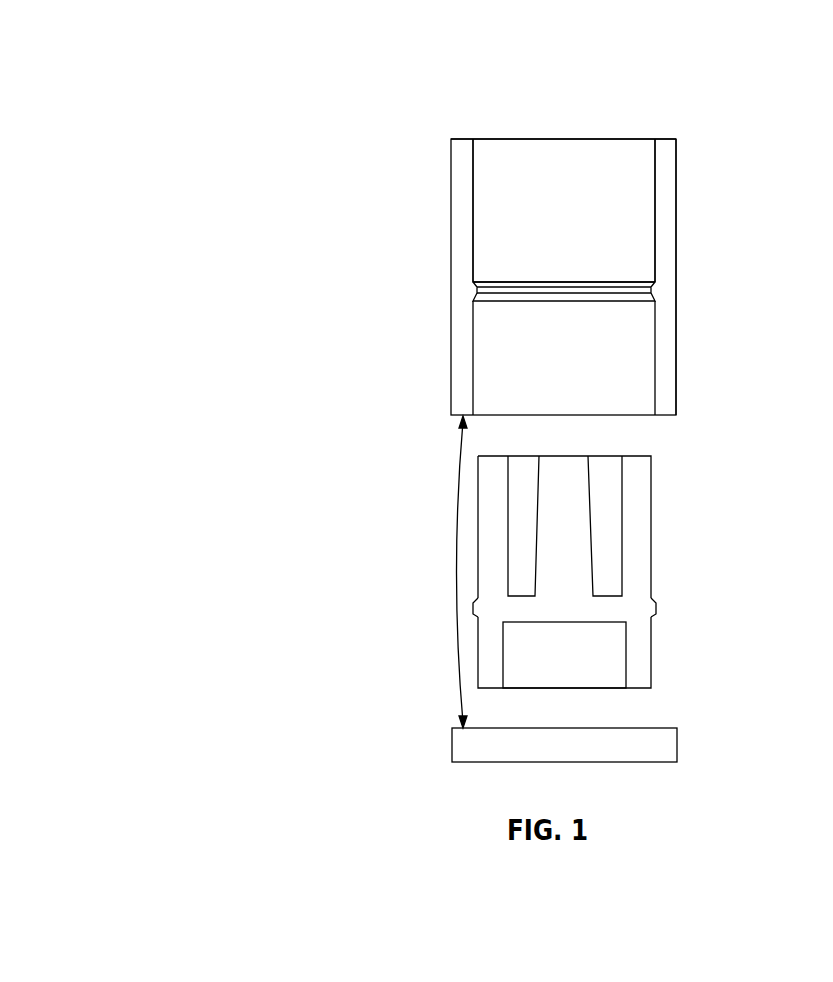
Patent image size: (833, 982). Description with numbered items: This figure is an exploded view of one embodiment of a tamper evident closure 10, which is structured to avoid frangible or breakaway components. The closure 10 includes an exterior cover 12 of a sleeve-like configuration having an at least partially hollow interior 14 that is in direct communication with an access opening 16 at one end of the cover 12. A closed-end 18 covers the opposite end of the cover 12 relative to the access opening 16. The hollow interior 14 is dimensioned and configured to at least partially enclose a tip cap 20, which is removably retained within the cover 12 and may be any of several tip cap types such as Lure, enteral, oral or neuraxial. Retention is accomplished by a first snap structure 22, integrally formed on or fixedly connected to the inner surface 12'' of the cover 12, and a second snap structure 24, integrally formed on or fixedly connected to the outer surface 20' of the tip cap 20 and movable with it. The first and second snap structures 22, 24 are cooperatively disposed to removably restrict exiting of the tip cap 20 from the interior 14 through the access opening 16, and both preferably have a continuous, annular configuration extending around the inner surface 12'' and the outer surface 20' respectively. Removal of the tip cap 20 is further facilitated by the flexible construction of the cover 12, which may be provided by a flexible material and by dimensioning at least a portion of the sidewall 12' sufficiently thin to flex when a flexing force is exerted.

The tamper evident closure 10 is at (380, 381).
The exterior cover 12 is at (625, 239).
The sidewall 12' is at (683, 277).
The inner surface 12'' is at (616, 277).
The hollow interior 14 is at (564, 210).
The access opening 16 is at (574, 138).
The closed-end 18 is at (452, 746).
The tip cap 20 is at (558, 572).
The outer surface 20' is at (638, 655).
The first snap structure 22 is at (484, 302).
The second snap structure 24 is at (655, 607).